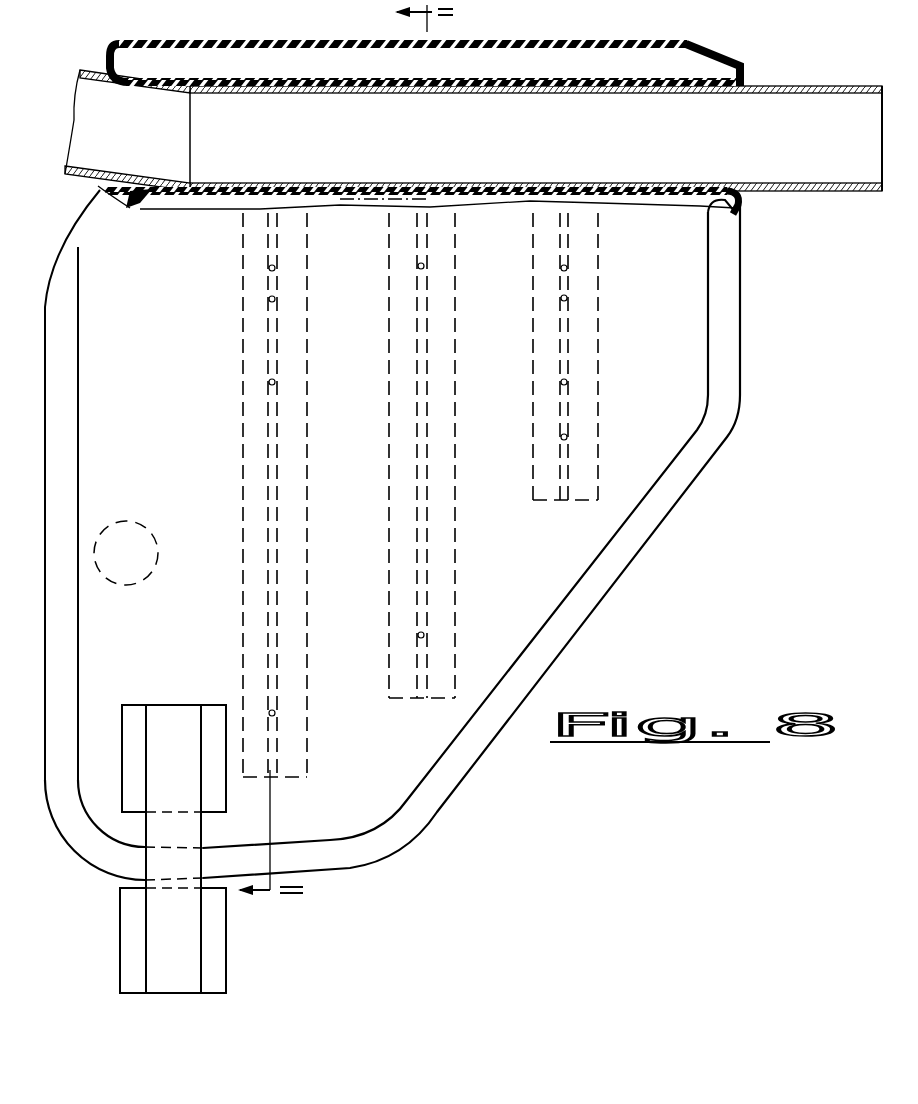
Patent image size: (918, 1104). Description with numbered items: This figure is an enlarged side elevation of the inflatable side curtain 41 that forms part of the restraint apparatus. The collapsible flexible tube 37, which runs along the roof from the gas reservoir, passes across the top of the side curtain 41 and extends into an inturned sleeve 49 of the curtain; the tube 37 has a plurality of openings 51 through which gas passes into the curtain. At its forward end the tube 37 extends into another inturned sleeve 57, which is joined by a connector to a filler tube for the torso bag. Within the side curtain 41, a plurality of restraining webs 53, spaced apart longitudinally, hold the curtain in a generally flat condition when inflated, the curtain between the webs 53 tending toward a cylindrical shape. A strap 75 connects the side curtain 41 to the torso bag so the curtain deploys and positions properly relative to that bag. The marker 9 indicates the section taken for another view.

The collapsible flexible tube 37 is at (810, 94).
The inflatable side curtain 41 is at (683, 332).
The inturned sleeve 49 is at (657, 198).
The openings 51 is at (523, 183).
The restraining webs 53 is at (418, 410).
The inturned sleeve 57 is at (300, 80).
The strap 75 is at (183, 833).
The section line 9- 9 is at (345, 479).